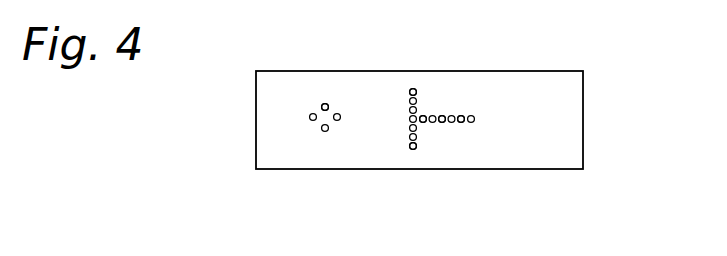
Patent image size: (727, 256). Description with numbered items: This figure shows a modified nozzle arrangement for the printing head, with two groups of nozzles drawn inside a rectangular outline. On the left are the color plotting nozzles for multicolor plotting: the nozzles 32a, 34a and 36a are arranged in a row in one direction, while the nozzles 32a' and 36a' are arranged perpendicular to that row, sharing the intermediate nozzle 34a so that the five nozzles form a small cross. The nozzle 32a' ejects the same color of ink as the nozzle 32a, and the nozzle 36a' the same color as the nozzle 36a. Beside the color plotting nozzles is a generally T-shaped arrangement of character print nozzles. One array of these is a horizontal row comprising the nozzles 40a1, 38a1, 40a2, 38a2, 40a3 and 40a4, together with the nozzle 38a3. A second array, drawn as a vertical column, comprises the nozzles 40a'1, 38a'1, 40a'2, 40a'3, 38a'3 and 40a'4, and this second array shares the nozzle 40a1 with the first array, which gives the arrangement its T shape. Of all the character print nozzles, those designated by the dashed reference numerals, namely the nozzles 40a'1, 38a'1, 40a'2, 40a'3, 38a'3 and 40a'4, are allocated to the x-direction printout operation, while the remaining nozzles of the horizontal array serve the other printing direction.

The nozzle 32a is at (305, 169).
The nozzle 32a' is at (254, 142).
The intermediate nozzle 34a is at (321, 107).
The nozzle 36a is at (313, 69).
The nozzle 36a' is at (357, 73).
The character print nozzle 38a1 is at (423, 122).
The character print nozzle 38a2 is at (443, 122).
The character print nozzle 38a3 is at (462, 122).
The character print nozzle 38a'1 is at (383, 87).
The character print nozzle 38a'3 is at (396, 183).
The character print nozzle 40a1 is at (424, 116).
The character print nozzle 40a2 is at (444, 116).
The character print nozzle 40a3 is at (464, 117).
The character print nozzle 40a4 is at (475, 119).
The character print nozzle 40a'1 is at (436, 63).
The character print nozzle 40a'2 is at (382, 115).
The character print nozzle 40a'3 is at (379, 143).
The character print nozzle 40a'4 is at (447, 181).